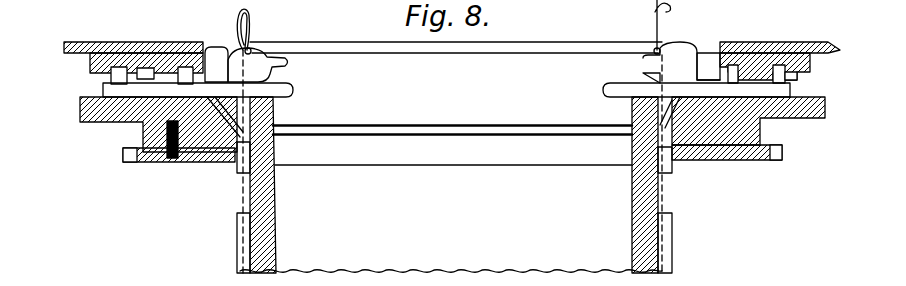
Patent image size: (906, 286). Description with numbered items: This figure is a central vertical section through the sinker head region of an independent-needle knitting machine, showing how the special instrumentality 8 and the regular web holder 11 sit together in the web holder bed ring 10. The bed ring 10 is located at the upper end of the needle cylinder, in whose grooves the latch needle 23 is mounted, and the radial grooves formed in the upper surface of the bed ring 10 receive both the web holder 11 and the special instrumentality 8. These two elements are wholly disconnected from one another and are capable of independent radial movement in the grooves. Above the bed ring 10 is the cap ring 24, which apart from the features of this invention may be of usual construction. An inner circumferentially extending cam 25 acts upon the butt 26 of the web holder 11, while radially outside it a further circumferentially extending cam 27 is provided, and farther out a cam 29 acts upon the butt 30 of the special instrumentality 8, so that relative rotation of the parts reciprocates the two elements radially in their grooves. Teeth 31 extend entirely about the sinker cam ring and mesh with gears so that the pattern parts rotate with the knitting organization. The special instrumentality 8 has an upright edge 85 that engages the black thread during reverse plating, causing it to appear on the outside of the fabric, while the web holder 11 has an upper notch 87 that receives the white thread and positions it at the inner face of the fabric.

The special instrumentality 8 is at (234, 92).
The web holder bed ring 10 is at (112, 117).
The web holder 11 is at (270, 63).
The latch needle 23 is at (248, 197).
The cap ring 24 is at (760, 70).
The inner circumferentially extending cam 25 is at (718, 70).
The butt 26 is at (184, 70).
The circumferentially extending cam 27 is at (786, 112).
The cam 29 is at (798, 76).
The butt 30 is at (118, 70).
The teeth 31 is at (125, 152).
The upright edge 85 is at (228, 56).
The upper notch 87 is at (252, 50).